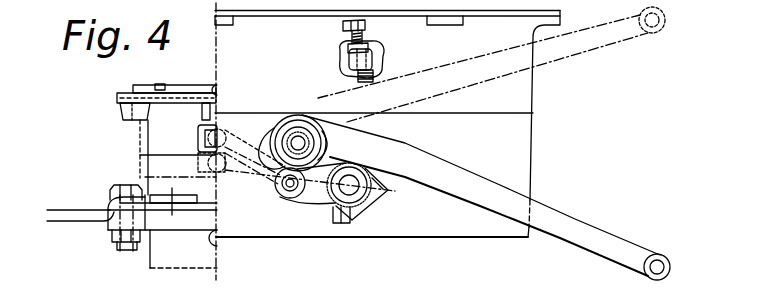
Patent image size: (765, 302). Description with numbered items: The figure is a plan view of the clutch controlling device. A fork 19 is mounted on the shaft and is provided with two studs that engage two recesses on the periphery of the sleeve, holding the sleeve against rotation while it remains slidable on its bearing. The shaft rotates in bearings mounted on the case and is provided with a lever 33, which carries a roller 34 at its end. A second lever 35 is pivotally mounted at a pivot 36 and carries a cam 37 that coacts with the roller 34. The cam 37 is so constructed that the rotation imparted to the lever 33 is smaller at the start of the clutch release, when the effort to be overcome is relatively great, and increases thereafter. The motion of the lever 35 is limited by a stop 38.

The fork 19 is at (244, 157).
The lever 33 is at (322, 188).
The roller 34 is at (285, 200).
The lever 35 is at (438, 170).
The pivot 36 is at (300, 138).
The cam 37 is at (267, 150).
The stop 38 is at (382, 58).